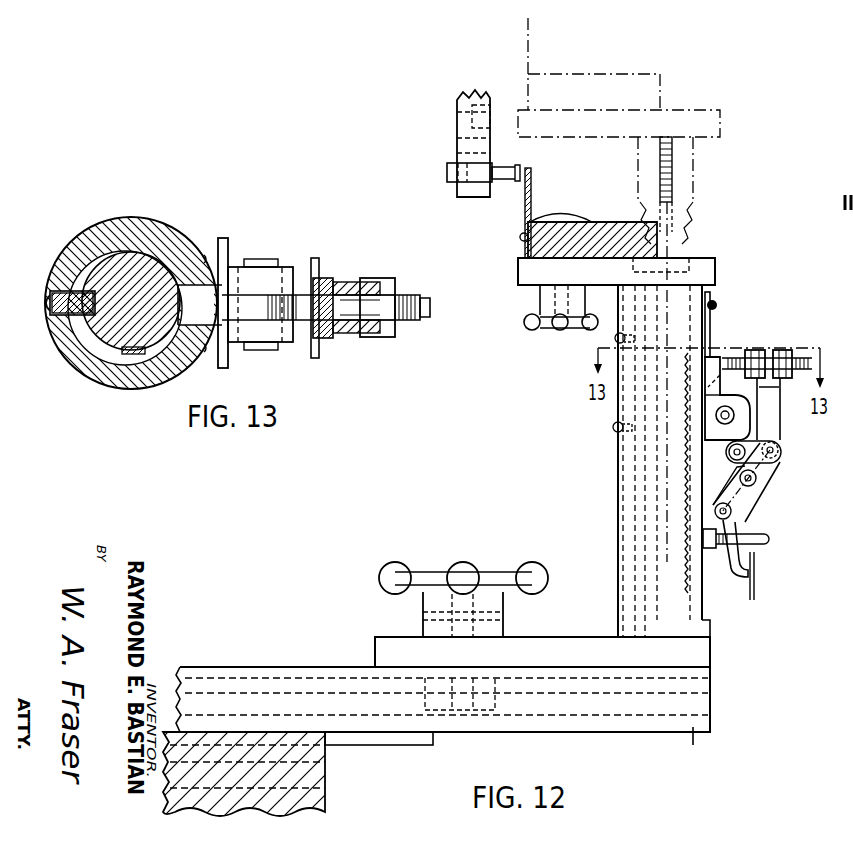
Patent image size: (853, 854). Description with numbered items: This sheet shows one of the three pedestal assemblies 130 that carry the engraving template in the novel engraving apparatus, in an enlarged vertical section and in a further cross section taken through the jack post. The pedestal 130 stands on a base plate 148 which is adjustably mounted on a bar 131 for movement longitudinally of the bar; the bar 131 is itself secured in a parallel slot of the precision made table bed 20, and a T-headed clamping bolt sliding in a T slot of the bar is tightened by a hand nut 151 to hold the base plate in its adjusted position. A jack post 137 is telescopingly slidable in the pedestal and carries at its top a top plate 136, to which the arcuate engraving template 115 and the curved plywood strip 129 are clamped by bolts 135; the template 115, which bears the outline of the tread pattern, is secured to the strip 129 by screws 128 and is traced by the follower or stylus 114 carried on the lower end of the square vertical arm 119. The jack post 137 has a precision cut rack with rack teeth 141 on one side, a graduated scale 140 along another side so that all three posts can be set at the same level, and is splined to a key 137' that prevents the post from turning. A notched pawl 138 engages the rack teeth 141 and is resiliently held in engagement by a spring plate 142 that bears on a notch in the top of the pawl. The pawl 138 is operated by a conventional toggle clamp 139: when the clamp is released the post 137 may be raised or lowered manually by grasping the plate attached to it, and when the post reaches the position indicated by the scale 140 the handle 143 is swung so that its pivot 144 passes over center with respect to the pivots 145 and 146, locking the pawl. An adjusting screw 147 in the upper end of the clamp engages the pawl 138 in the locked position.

In FIG. 12, the bed 20 is at (325, 779).
In FIG. 12, the follower or stylus 114 is at (447, 172).
In FIG. 12, the arcuate template 115 is at (532, 212).
In FIG. 12, the square vertical arm 119 is at (460, 108).
In FIG. 12, the screws 128 is at (520, 240).
In FIG. 12, the curved strip 129 is at (660, 250).
In FIG. 13, the pedestal 130 is at (132, 230).
In FIG. 12, the pedestal 130 is at (612, 494).
In FIG. 12, the bar 131 is at (444, 720).
In FIG. 12, the bolts 135 is at (540, 300).
In FIG. 12, the top plate 136 is at (712, 280).
In FIG. 13, the jack post 137 is at (145, 275).
In FIG. 12, the jack post 137 is at (644, 405).
In FIG. 13, the key 137' is at (62, 276).
In FIG. 13, the notched pawl 138 is at (256, 292).
In FIG. 12, the notched pawl 138 is at (713, 355).
In FIG. 12, the toggle clamp 139 is at (788, 467).
In FIG. 12, the graduated scale 140 is at (675, 166).
In FIG. 12, the rack teeth 141 is at (690, 577).
In FIG. 13, the spring plate 142 is at (230, 350).
In FIG. 12, the spring plate 142 is at (712, 317).
In FIG. 12, the handle 143 is at (750, 506).
In FIG. 12, the pivot 144 is at (754, 482).
In FIG. 12, the pivot 145 is at (731, 514).
In FIG. 12, the pivot 146 is at (780, 450).
In FIG. 13, the adjusting screw 147 is at (407, 318).
In FIG. 12, the adjusting screw 147 is at (798, 357).
In FIG. 12, the base plate 148 is at (710, 656).
In FIG. 12, the hand nut 151 is at (390, 570).